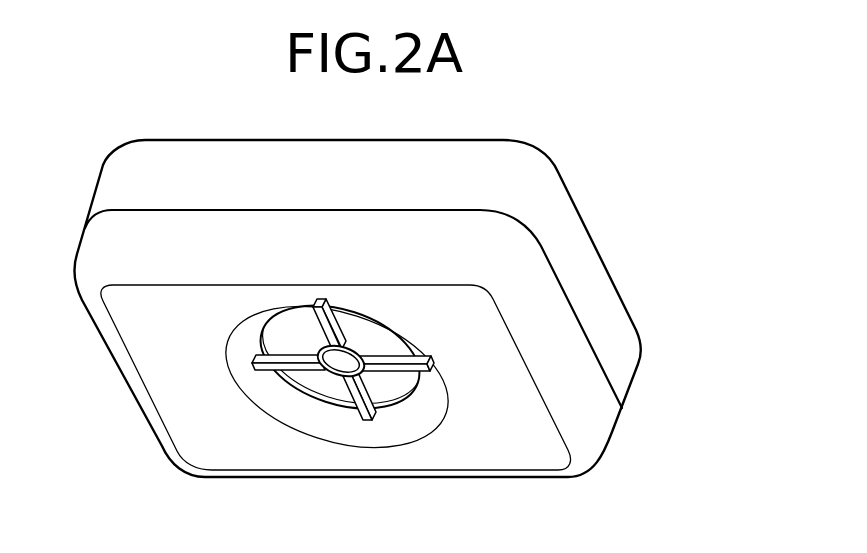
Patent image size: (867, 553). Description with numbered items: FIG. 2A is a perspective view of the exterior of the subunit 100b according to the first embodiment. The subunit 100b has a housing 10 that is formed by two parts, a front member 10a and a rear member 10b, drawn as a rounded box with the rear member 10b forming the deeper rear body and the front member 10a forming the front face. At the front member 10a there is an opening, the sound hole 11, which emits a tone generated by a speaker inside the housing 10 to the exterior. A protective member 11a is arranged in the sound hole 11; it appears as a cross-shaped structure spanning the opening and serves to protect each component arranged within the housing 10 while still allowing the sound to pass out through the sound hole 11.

The subunit 100b is at (582, 149).
The housing 10 is at (737, 485).
The front member 10a is at (605, 416).
The rear member 10b is at (629, 360).
The sound hole 11 is at (397, 390).
The protective member 11a is at (360, 414).